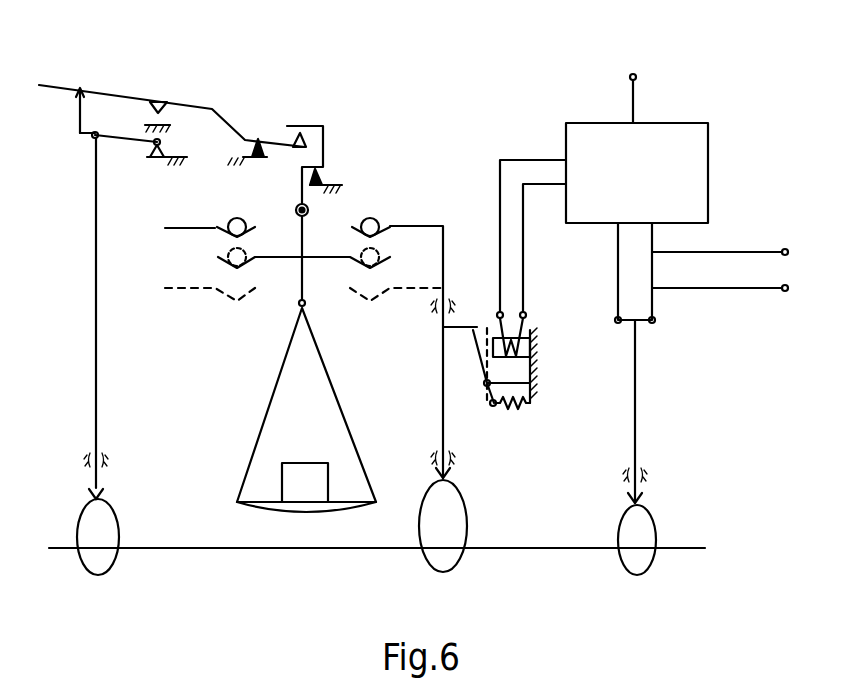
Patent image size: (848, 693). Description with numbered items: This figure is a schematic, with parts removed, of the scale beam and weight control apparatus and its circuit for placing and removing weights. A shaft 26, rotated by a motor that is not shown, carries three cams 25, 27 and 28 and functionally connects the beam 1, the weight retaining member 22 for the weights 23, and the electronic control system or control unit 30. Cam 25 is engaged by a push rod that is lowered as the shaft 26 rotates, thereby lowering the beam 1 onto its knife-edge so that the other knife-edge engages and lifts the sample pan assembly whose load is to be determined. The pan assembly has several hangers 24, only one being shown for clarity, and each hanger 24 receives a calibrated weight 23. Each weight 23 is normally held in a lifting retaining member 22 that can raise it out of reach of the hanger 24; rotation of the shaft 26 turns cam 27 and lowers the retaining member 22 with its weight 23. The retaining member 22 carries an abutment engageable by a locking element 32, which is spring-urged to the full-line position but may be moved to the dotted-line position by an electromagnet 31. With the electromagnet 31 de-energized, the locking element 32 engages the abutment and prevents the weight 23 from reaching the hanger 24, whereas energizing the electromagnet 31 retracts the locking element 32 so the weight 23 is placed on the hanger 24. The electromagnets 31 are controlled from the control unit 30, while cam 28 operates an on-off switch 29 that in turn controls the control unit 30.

The beam 1 is at (189, 105).
The weight retaining member 22 is at (428, 223).
The weight 23 is at (371, 217).
The hanger 24 is at (285, 258).
The cam 25 is at (108, 523).
The shaft 26 is at (523, 547).
The cam 27 is at (455, 518).
The cam 28 is at (647, 527).
The on-off switch 29 is at (648, 329).
The control unit 30 is at (697, 176).
The electromagnet 31 is at (522, 332).
The locking element 32 is at (473, 358).